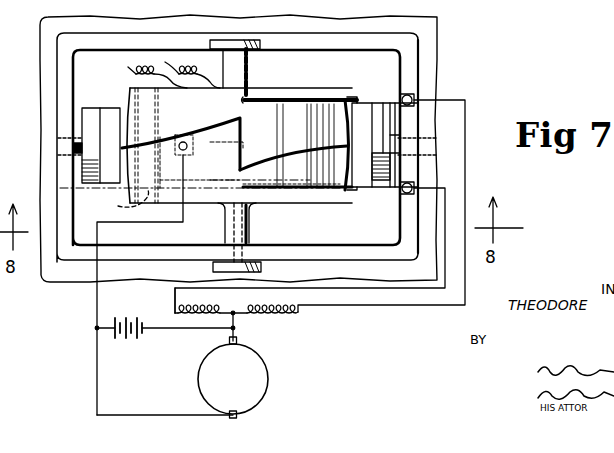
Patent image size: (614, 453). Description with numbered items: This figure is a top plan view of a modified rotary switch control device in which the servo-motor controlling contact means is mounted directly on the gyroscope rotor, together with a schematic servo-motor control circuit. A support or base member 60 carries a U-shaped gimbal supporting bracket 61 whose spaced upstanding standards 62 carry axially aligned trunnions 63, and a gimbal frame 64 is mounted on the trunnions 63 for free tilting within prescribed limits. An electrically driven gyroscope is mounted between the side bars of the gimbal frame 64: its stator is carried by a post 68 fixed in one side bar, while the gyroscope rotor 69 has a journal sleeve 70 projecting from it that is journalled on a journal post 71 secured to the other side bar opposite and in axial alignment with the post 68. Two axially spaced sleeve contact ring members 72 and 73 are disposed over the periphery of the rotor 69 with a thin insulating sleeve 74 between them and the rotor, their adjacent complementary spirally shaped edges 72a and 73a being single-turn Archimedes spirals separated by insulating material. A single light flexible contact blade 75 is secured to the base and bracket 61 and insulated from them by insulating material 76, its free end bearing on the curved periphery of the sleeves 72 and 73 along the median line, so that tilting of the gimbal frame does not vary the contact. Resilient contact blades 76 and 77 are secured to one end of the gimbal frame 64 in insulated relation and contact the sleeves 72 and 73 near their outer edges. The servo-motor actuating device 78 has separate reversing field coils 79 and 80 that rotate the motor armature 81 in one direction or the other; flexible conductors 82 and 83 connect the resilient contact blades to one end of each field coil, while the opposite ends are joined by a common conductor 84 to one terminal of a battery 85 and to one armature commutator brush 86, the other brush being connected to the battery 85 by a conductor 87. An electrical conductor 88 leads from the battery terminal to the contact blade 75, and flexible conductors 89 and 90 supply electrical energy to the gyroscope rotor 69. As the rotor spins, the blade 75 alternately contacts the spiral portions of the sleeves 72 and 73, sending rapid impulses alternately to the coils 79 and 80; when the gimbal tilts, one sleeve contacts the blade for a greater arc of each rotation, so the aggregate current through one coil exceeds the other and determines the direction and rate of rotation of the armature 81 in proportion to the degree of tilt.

The support or base member 60 is at (428, 81).
The U-shaped gimbal supporting bracket 61 is at (366, 118).
The upstanding arm or standard 62 is at (372, 166).
The trunnion 63 is at (418, 147).
The gimbal frame 64 is at (420, 58).
The post 68 is at (250, 67).
The gyroscope rotor 69 is at (103, 177).
The journal sleeve 70 is at (230, 233).
The journal post 71 is at (252, 233).
The sleeve contact ring member 72 is at (257, 96).
The spirally shaped edge 72a is at (255, 150).
The sleeve contact ring member 73 is at (302, 195).
The spirally shaped edge 73a is at (250, 166).
The insulating sleeve 74 is at (125, 194).
The contact blade 75 is at (193, 155).
The insulating material / resilient contact blade 76 is at (350, 95).
The resilient contact blade 77 is at (366, 190).
The servo-motor actuating device 78 is at (276, 381).
The field coil 79 is at (212, 306).
The field coil 80 is at (290, 318).
The motor armature 81 is at (175, 305).
The flexible conductor 82 is at (467, 110).
The flexible conductor 83 is at (445, 200).
The common conductor 84 is at (172, 332).
The battery 85 is at (118, 340).
The armature commutator brush 86 is at (238, 341).
The conductor 87 is at (97, 398).
The electrical conductor 88 is at (97, 300).
The flexible conductor 89 is at (145, 77).
The flexible conductor 90 is at (209, 78).